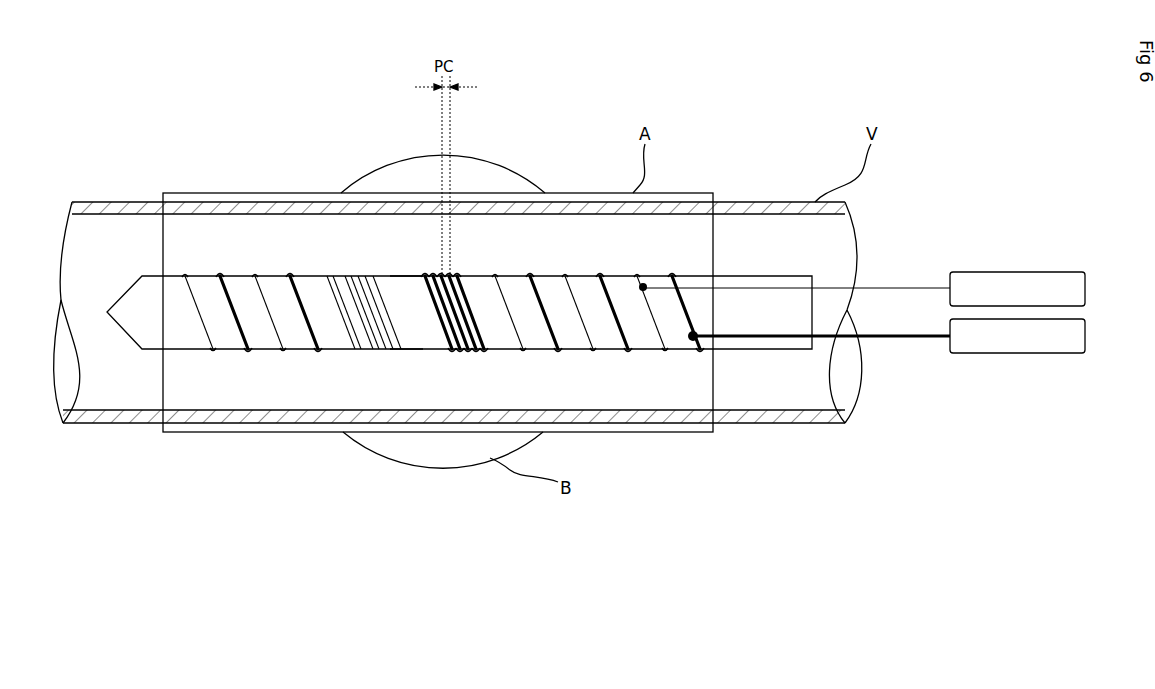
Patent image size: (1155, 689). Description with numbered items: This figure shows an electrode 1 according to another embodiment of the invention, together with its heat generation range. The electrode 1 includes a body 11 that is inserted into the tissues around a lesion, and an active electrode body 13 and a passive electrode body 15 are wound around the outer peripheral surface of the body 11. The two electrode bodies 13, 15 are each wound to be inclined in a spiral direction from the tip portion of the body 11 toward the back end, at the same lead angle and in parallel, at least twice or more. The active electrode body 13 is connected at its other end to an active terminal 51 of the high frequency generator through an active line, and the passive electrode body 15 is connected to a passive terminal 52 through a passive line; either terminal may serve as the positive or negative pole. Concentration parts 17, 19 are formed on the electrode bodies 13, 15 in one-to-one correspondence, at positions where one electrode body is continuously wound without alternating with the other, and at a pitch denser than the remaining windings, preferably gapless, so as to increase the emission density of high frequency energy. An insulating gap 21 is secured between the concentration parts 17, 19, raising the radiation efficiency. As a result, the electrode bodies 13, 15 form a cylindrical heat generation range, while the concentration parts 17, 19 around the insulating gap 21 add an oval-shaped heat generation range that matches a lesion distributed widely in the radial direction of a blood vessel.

The electrode 1 is at (765, 198).
The body 11 is at (247, 278).
The active electrode body 13 is at (191, 313).
The passive electrode body 15 is at (210, 315).
The concentration part 17 is at (340, 270).
The concentration part 19 is at (449, 270).
The insulating gap 21 is at (413, 335).
The active terminal 51 is at (1020, 272).
The passive terminal 52 is at (1015, 355).